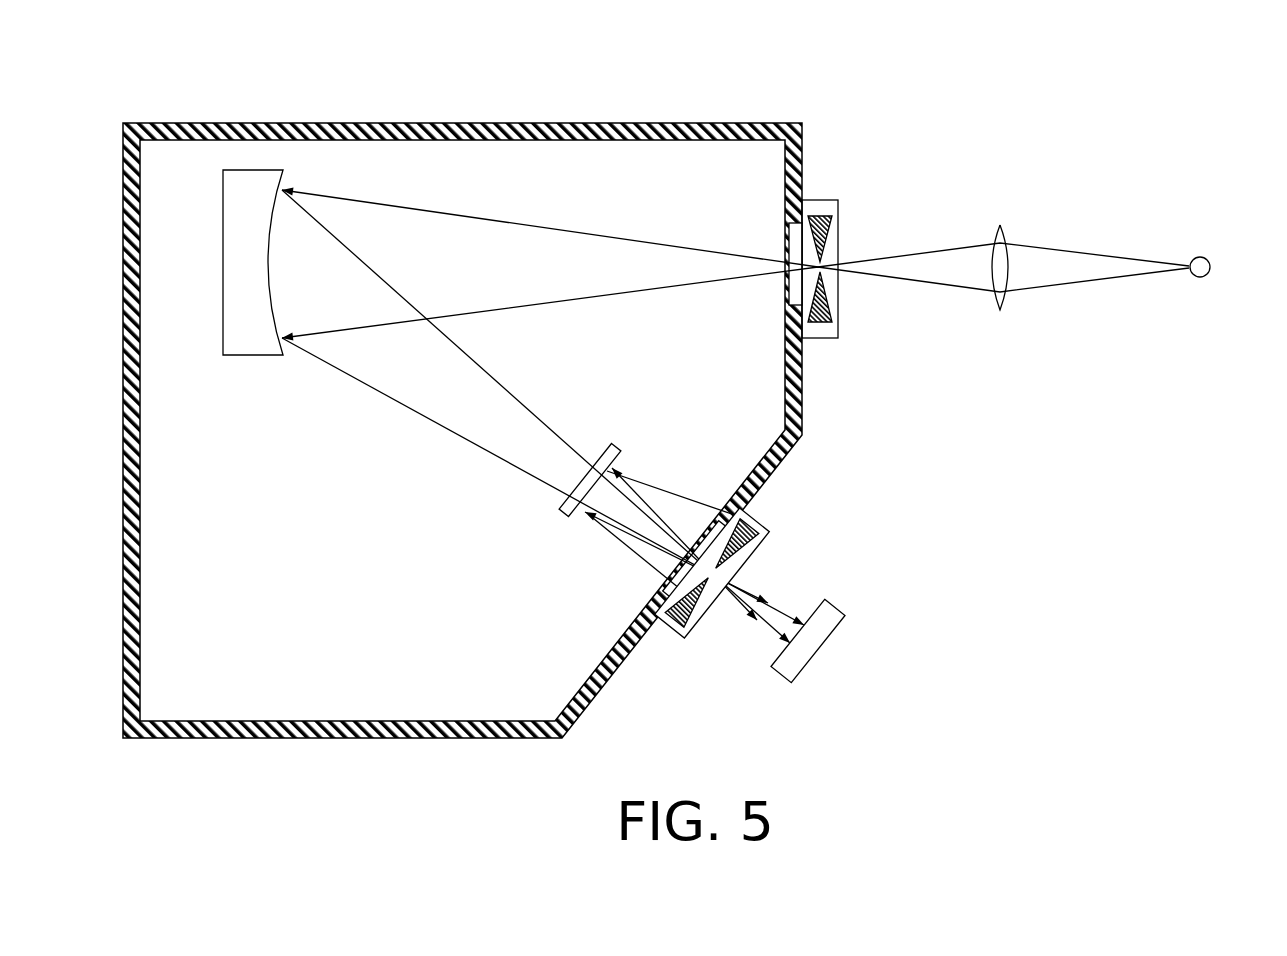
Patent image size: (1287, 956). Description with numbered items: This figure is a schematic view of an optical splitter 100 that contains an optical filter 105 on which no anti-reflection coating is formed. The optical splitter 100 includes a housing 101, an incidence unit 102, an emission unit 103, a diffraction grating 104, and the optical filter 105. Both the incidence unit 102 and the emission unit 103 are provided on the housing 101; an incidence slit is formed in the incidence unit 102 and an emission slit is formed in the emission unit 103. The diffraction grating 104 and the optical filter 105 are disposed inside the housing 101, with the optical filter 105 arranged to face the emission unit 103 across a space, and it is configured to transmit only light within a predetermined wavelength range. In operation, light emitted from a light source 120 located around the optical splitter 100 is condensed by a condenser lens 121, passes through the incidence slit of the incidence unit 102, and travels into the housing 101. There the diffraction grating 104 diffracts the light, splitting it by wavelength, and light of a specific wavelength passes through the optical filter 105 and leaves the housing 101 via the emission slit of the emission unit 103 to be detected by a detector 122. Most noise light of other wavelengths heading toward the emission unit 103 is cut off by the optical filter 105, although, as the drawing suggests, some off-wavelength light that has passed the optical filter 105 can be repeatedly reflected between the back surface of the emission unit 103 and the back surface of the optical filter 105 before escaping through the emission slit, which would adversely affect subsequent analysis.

The optical splitter 100 is at (604, 98).
The housing 101 is at (413, 124).
The incidence unit 102 is at (823, 200).
The emission unit 103 is at (690, 640).
The diffraction grating 104 is at (257, 357).
The optical filter 105 is at (607, 444).
The light source 120 is at (1212, 257).
The condenser lens 121 is at (1005, 230).
The detector 122 is at (836, 658).